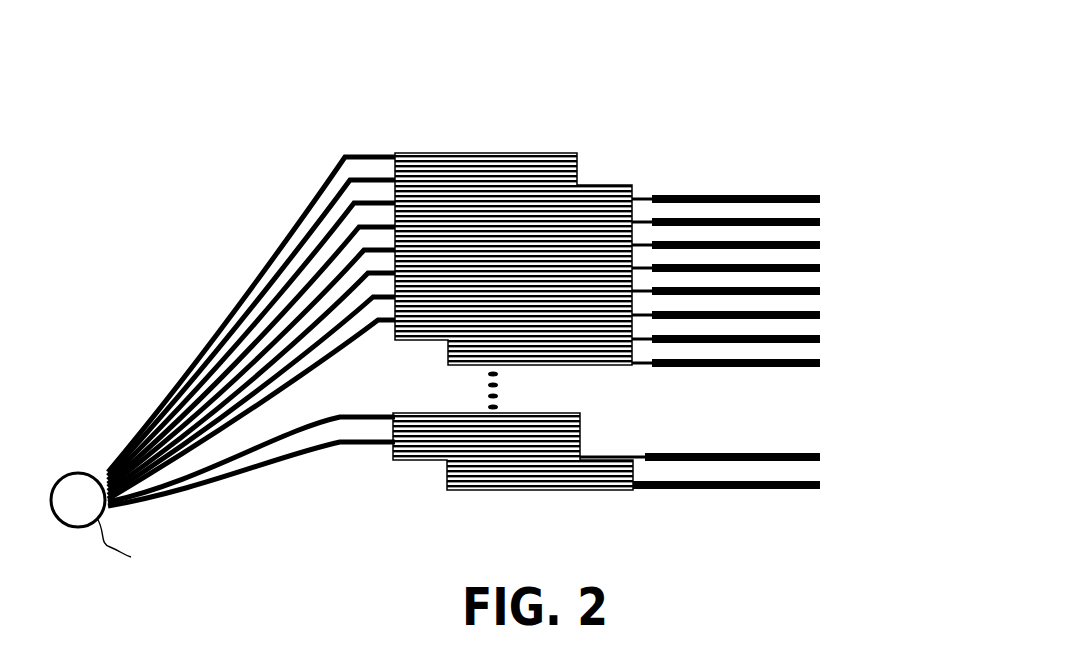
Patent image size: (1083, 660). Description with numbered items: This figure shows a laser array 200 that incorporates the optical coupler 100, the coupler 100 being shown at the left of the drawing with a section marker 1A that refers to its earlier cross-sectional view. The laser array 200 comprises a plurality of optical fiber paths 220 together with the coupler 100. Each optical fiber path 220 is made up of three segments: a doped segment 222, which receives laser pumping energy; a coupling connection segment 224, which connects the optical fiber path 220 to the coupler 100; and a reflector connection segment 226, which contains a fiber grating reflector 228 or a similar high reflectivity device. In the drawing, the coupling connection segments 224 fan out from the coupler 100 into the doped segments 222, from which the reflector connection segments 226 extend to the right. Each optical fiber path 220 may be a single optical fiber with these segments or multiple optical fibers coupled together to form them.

The coupler 100 is at (96, 468).
The cross-section view reference 1A is at (131, 545).
The laser array 200 is at (449, 63).
The optical fiber path 220 is at (632, 136).
The doped segment 222 is at (515, 138).
The coupling connection segment 224 is at (252, 272).
The reflector connection segment 226 is at (730, 161).
The fiber grating reflector 228 is at (762, 195).